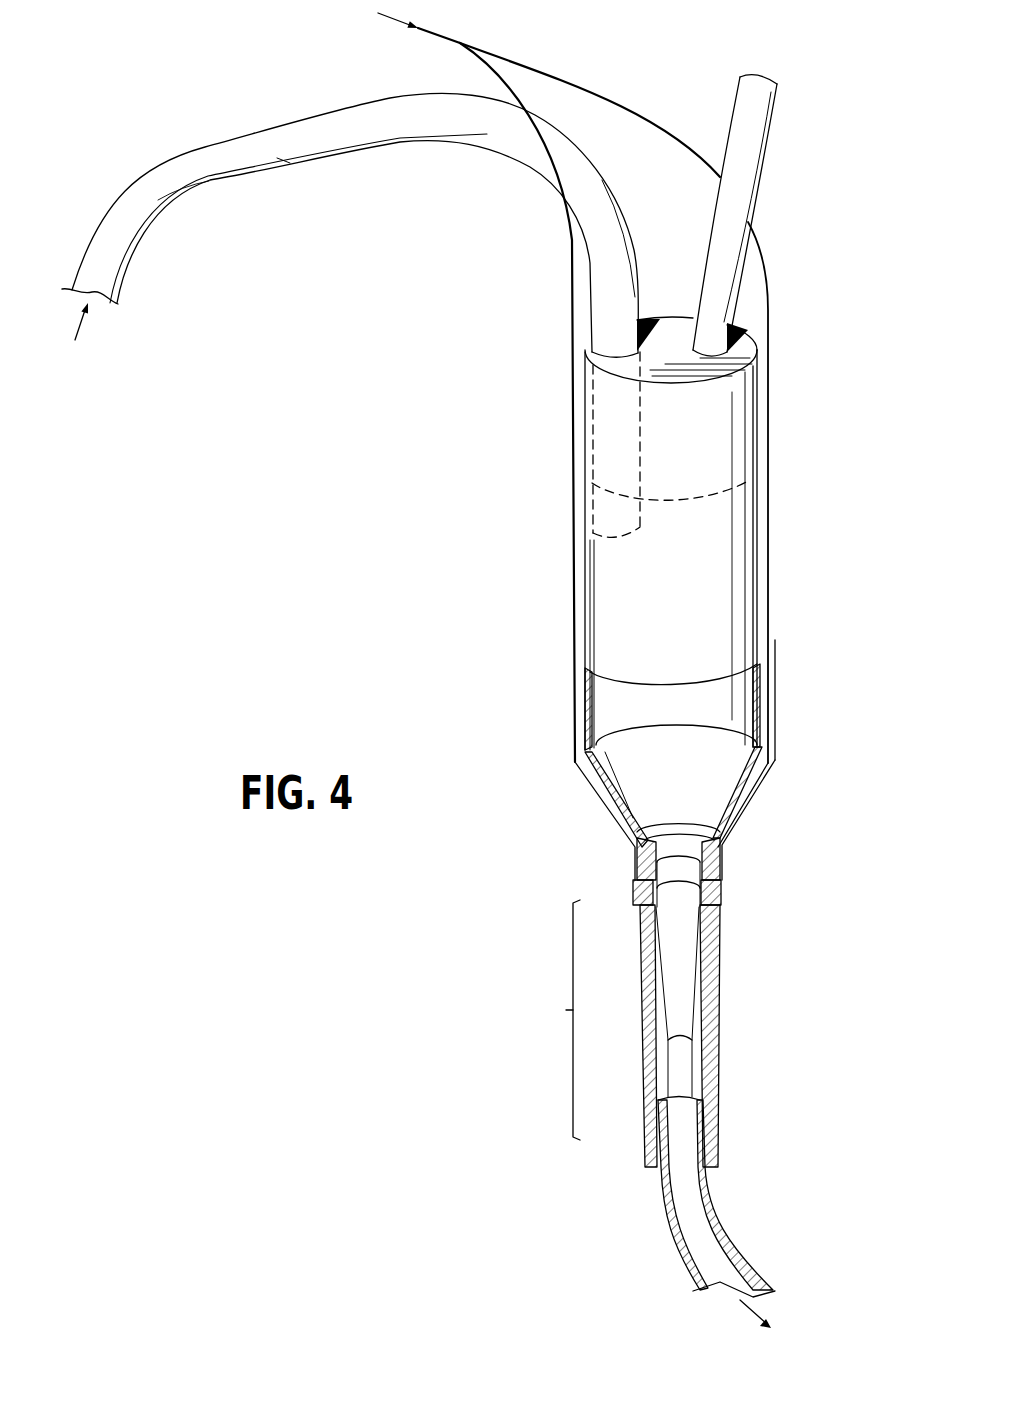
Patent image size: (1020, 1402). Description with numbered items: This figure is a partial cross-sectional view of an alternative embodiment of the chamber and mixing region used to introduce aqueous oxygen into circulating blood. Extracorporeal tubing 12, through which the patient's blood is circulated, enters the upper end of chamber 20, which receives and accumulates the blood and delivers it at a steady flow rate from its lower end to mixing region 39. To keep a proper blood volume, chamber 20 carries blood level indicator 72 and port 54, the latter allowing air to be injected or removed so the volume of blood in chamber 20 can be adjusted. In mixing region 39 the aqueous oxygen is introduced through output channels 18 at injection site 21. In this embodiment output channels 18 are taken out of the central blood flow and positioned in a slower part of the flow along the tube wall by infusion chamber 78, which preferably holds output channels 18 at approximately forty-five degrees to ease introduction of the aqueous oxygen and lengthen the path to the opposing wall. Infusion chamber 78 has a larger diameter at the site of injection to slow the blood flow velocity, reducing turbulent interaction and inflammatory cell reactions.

The extracorporeal tubing 12 is at (283, 160).
The output channels 18 is at (596, 93).
The port 54 is at (767, 147).
The chamber 20 is at (760, 405).
The blood level indicator 72 is at (630, 502).
The injection site 21 is at (680, 893).
The mixing region 39 is at (566, 1010).
The infusion chamber 78 is at (720, 1048).